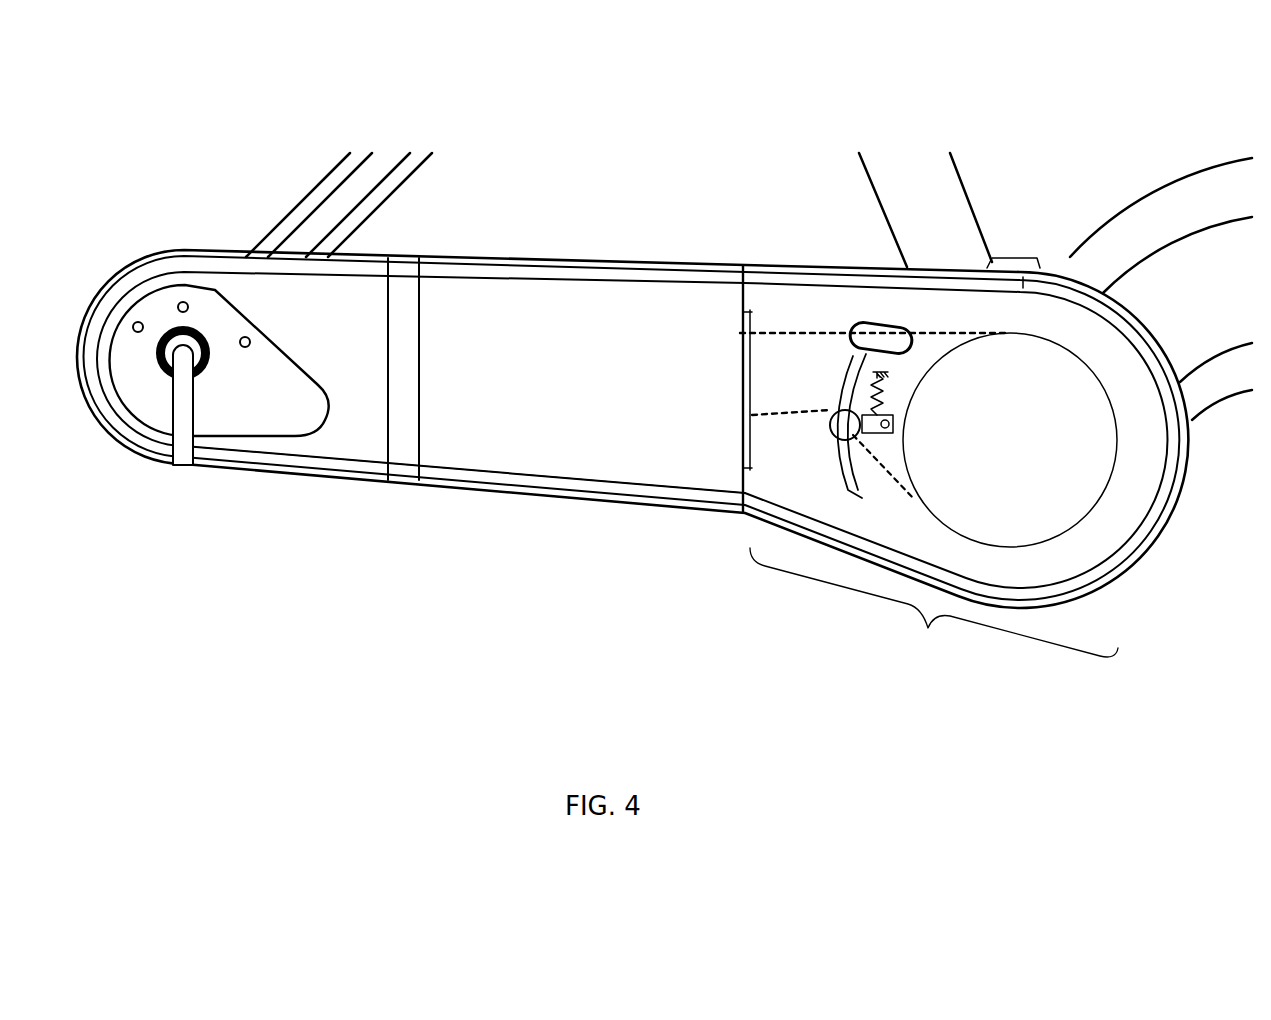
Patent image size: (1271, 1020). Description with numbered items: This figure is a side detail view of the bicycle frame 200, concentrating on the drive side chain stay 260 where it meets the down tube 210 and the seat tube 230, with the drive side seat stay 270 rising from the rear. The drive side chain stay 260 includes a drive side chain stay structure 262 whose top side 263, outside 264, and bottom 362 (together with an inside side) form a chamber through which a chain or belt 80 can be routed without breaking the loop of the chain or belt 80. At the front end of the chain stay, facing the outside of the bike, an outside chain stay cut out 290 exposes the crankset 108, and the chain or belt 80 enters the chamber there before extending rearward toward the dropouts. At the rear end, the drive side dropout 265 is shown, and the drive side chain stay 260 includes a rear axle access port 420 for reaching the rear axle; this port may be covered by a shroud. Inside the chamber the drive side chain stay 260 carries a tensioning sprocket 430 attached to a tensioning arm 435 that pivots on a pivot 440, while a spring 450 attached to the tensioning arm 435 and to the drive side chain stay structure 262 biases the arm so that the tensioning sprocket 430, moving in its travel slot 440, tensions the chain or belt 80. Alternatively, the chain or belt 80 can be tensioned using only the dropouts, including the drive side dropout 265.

The bicycle frame 200 is at (890, 88).
The down tube 210 is at (1200, 272).
The seat tube 230 is at (925, 215).
The drive side seat stay 270 is at (320, 215).
The top side 263 is at (575, 265).
The drive side chain stay 260 is at (530, 452).
The outside 264 is at (630, 435).
The bottom 362 is at (668, 508).
The drive side chain stay structure 262 is at (450, 563).
The drive side dropout 265 is at (182, 447).
The rear axle access port 420 is at (292, 412).
The chain or belt 80 is at (797, 333).
The tensioning sprocket 430 is at (840, 412).
The spring 450 is at (882, 397).
The pivot 440 is at (895, 422).
The tensioning arm 435 is at (895, 432).
The crankset 108 is at (1075, 480).
The outside chain stay cut out 290 is at (928, 632).